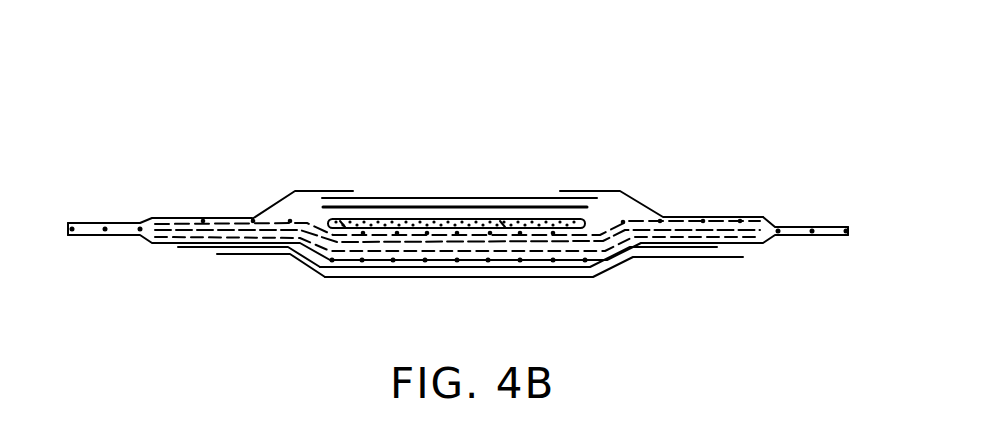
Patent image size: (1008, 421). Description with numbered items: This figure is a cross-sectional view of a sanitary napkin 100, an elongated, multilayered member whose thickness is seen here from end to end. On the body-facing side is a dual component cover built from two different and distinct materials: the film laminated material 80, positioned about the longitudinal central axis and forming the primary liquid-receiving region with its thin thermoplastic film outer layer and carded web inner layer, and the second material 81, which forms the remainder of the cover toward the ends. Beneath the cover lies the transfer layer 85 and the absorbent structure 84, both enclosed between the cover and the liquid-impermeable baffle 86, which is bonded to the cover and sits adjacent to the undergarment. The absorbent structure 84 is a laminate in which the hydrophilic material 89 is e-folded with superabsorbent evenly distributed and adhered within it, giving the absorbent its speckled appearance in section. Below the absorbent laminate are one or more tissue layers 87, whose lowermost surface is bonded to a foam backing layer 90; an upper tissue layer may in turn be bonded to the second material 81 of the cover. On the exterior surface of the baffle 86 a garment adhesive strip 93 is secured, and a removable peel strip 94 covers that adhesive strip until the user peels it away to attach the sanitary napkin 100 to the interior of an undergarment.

The sanitary napkin 100 is at (696, 110).
The film laminated material 80 is at (400, 198).
The second material 81 is at (650, 207).
The absorbent structure 84 is at (565, 220).
The transfer layer 85 is at (437, 200).
The liquid-impermeable baffle 86 is at (515, 267).
The tissue layers 87 is at (280, 225).
The hydrophilic material 89 is at (490, 220).
The foam backing layer 90 is at (517, 220).
The garment adhesive strip 93 is at (260, 253).
The removable peel strip 94 is at (367, 278).